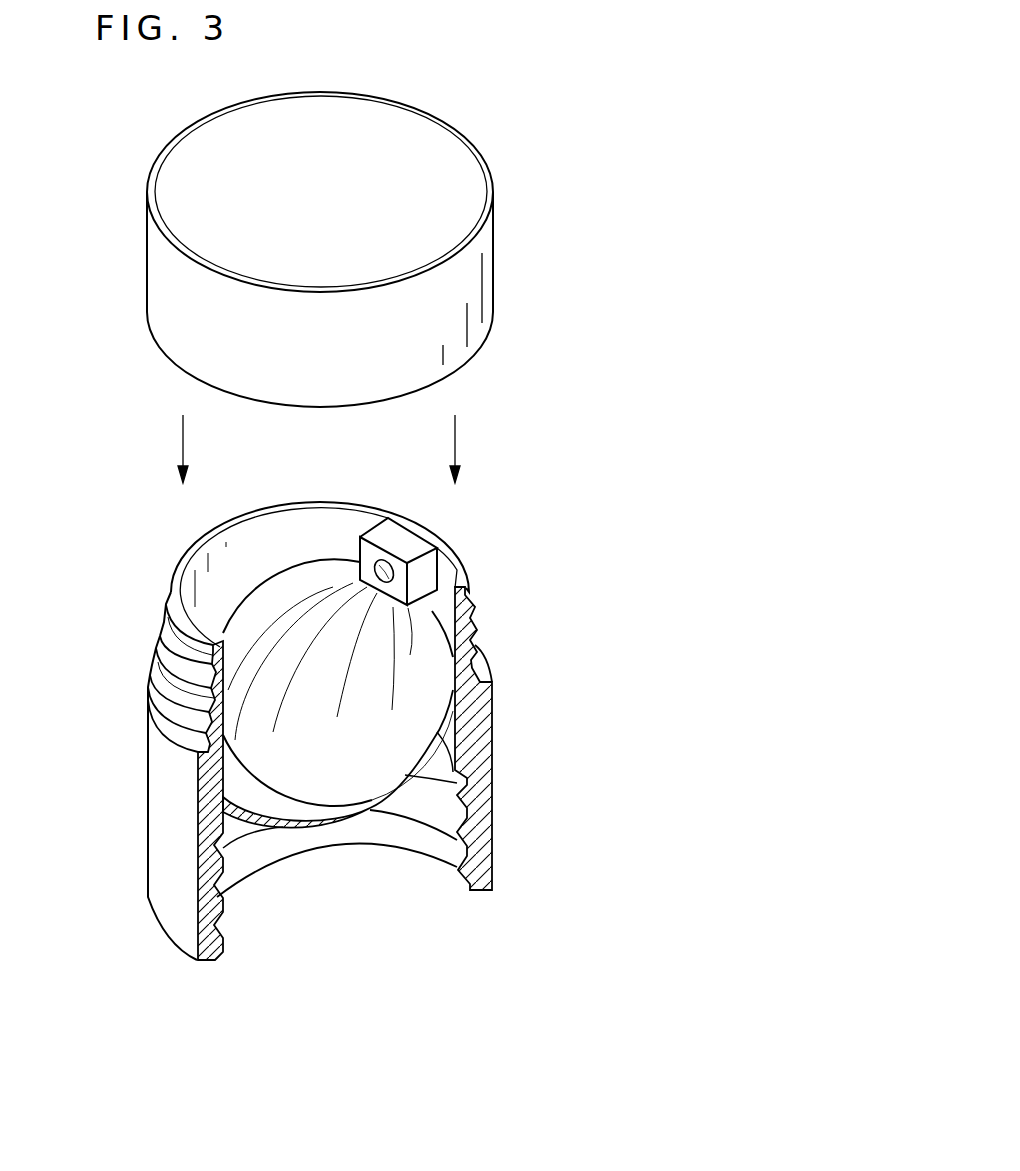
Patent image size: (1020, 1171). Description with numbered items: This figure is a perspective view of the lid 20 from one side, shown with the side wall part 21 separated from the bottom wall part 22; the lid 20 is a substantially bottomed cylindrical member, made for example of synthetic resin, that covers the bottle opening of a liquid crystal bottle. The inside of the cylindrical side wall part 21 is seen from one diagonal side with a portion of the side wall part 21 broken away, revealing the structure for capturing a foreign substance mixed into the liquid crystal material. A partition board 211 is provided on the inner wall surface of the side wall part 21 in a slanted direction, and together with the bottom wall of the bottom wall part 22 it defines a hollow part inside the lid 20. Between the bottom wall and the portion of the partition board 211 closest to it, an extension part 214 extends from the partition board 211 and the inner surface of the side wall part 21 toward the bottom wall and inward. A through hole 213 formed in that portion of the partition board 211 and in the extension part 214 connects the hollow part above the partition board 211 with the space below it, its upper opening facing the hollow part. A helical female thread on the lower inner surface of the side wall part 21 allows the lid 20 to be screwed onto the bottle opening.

The lid 20 is at (642, 33).
The side wall part 21 is at (382, 727).
The bottom wall part 22 is at (430, 115).
The partition board 211 is at (342, 787).
The through hole 213 is at (388, 582).
The extension part 214 is at (398, 543).